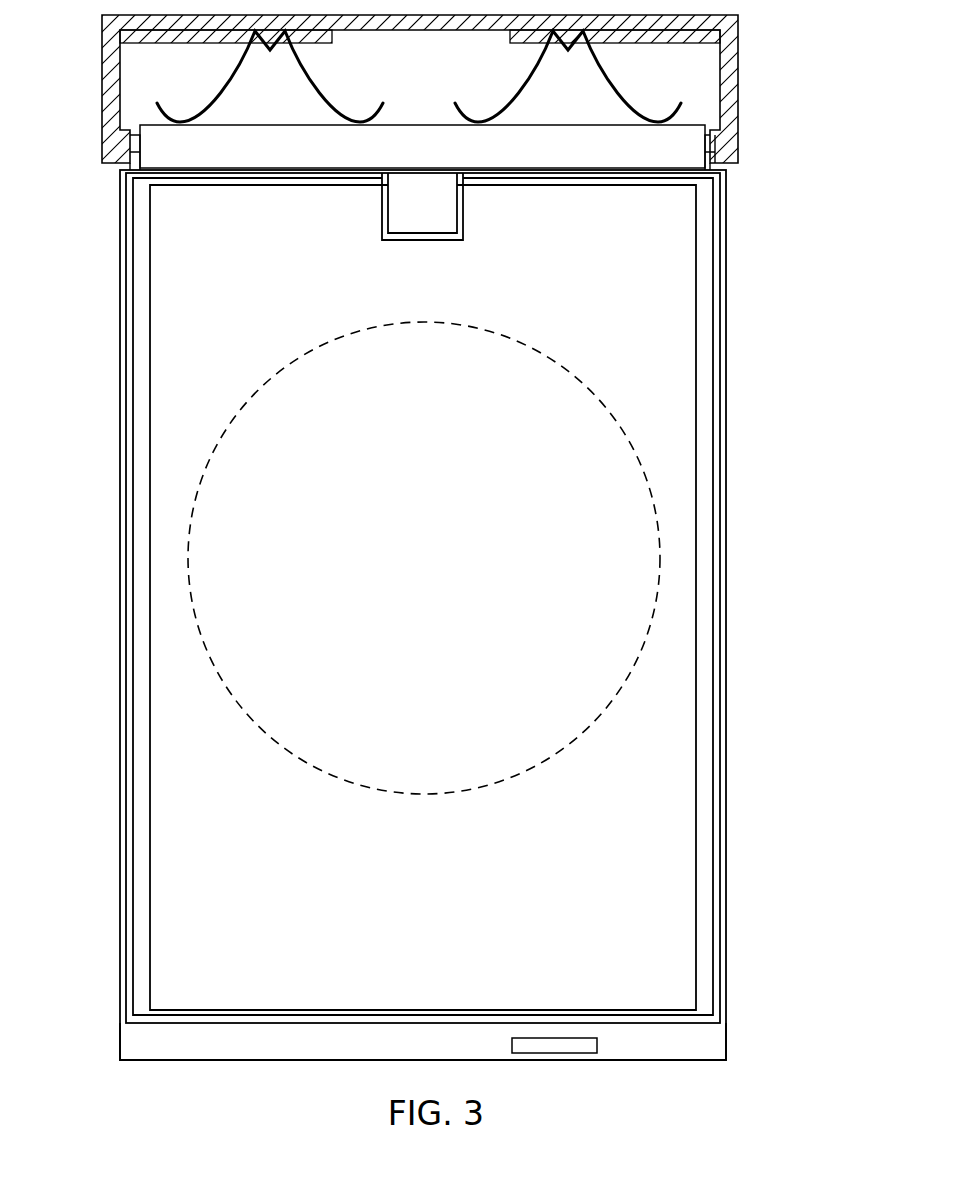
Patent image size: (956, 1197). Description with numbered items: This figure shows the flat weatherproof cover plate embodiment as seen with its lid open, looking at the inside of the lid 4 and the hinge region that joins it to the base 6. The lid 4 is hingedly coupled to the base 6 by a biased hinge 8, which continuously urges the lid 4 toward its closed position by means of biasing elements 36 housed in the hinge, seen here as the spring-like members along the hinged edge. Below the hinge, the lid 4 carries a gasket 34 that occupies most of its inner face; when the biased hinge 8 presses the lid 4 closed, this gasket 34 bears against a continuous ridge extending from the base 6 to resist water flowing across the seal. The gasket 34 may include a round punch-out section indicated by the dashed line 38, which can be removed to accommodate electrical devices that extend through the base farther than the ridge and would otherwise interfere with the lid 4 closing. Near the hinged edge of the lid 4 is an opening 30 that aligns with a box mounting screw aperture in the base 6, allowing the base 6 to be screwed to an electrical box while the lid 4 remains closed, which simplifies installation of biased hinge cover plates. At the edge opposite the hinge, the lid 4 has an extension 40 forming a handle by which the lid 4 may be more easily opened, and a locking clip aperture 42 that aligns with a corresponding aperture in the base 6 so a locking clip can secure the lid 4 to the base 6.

The lid 4 is at (78, 128).
The base 6 is at (104, 23).
The biased hinge 8 is at (113, 177).
The opening 30 is at (407, 217).
The gasket 34 is at (574, 933).
The biasing elements 36 is at (322, 78).
The punch-out section 38 is at (315, 767).
The extension 40 is at (243, 1040).
The locking clip aperture 42 is at (562, 1045).